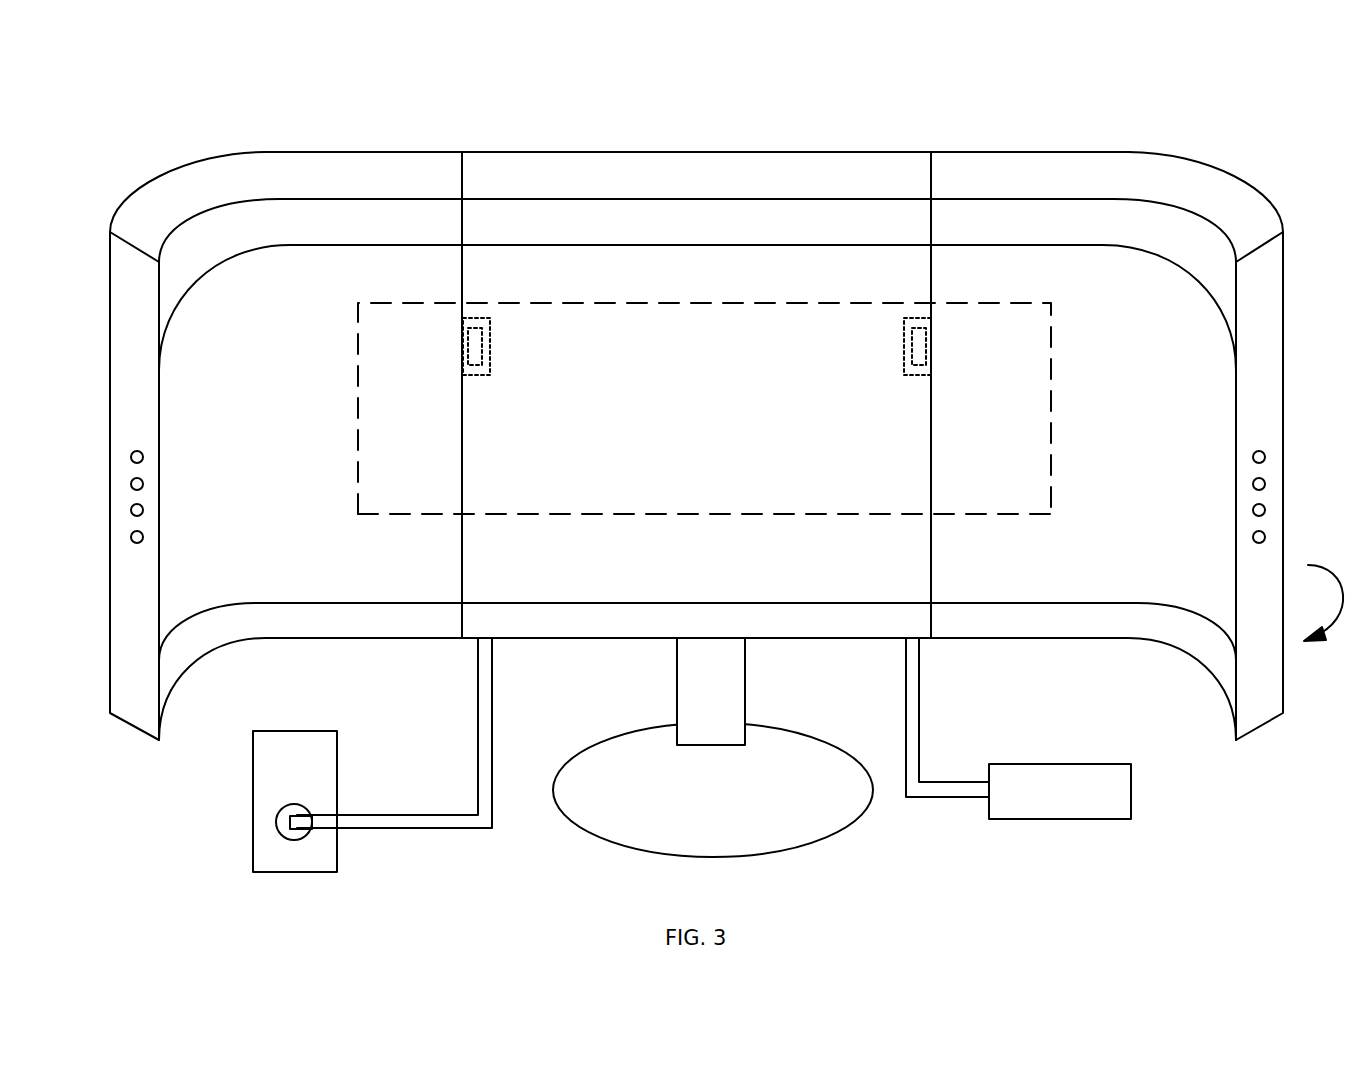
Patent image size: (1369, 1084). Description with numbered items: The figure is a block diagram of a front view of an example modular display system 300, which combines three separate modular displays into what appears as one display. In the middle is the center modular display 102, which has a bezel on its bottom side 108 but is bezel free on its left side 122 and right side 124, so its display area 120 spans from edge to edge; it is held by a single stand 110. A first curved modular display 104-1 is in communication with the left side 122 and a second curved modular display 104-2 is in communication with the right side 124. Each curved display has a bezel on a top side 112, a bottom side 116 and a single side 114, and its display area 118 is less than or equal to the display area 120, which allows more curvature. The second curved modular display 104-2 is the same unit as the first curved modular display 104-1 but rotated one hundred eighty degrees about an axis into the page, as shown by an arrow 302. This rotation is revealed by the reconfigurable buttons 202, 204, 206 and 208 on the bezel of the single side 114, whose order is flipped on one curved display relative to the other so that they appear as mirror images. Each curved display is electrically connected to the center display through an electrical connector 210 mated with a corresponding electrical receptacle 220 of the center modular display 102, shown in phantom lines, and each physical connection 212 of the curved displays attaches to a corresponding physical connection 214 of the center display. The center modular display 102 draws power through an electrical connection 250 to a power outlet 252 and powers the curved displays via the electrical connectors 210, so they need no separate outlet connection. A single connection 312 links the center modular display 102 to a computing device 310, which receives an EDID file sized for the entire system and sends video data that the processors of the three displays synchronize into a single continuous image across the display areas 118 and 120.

The modular display system 300 is at (102, 82).
The center modular display 102 is at (740, 152).
The first curved modular display 104-1 is at (408, 152).
The second curved modular display 104-2 is at (960, 152).
The bottom side 108 is at (832, 620).
The stand 110 is at (677, 700).
The top side 112 is at (342, 210).
The single side 114 is at (120, 392).
The bottom side 116 is at (1052, 210).
The display area 118 is at (405, 270).
The display area 120 is at (760, 283).
The left side 122 is at (466, 550).
The right side 124 is at (929, 550).
The reconfigurable button 202 is at (131, 457).
The reconfigurable button 204 is at (131, 484).
The reconfigurable button 206 is at (131, 510).
The reconfigurable button 208 is at (131, 537).
The electrical connector 210 is at (462, 345).
The physical connection 212 is at (357, 452).
The physical connection 214 is at (690, 514).
The electrical receptacle 220 is at (491, 345).
The electrical connection 250 is at (478, 748).
The power outlet 252 is at (314, 769).
The arrow 302 is at (1340, 625).
The computing device 310 is at (1082, 805).
The connection 312 is at (920, 740).